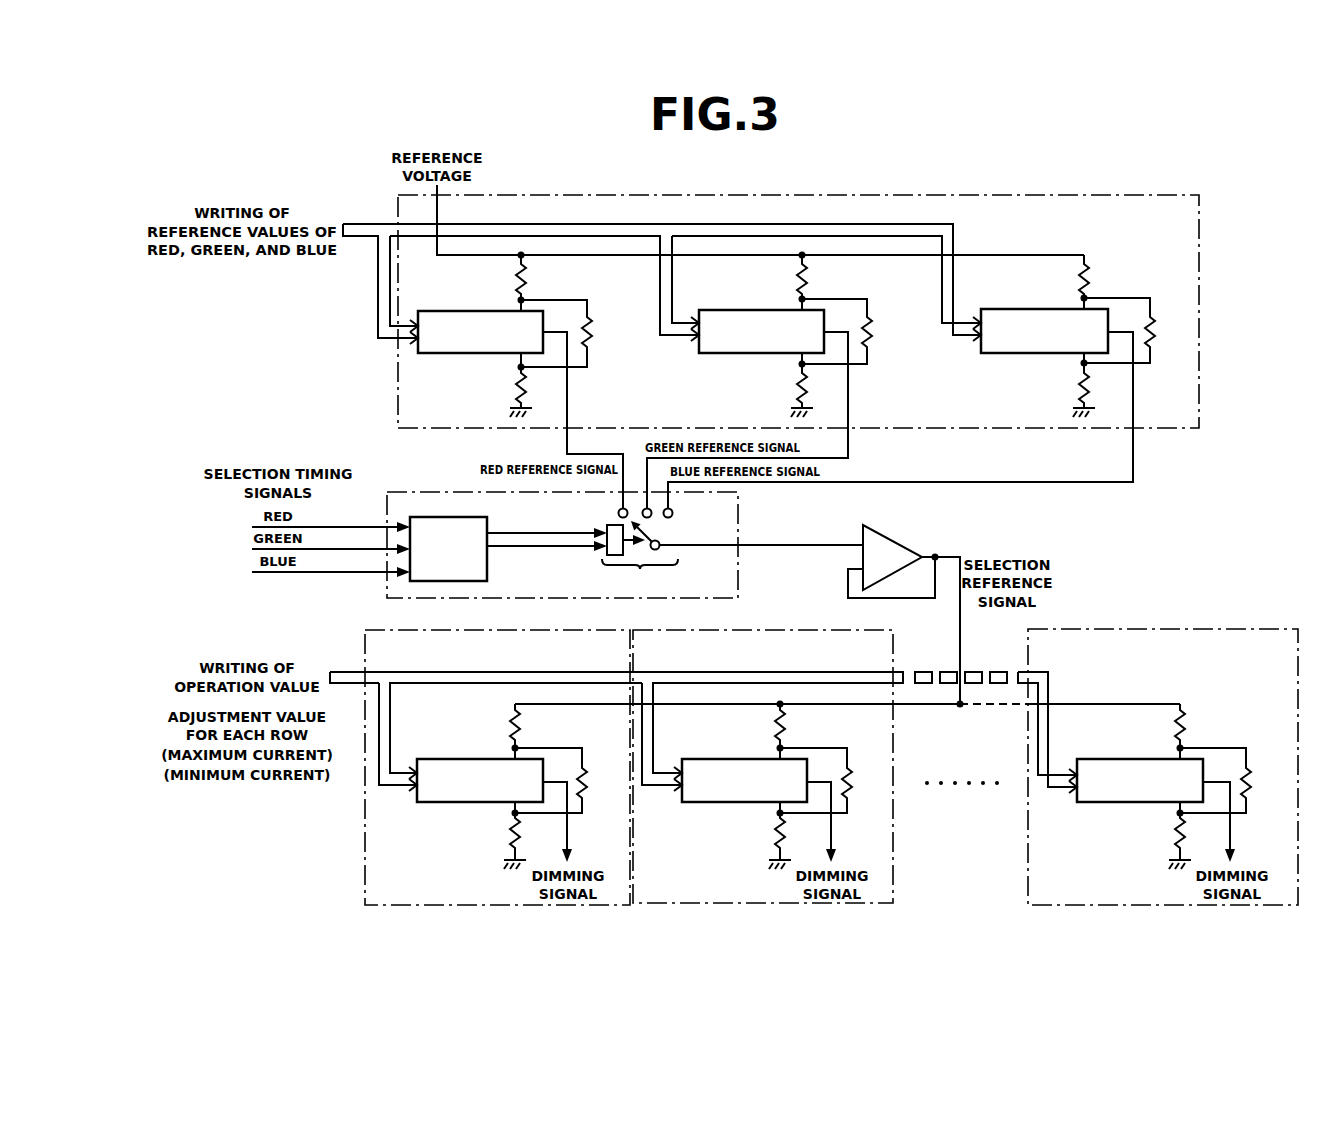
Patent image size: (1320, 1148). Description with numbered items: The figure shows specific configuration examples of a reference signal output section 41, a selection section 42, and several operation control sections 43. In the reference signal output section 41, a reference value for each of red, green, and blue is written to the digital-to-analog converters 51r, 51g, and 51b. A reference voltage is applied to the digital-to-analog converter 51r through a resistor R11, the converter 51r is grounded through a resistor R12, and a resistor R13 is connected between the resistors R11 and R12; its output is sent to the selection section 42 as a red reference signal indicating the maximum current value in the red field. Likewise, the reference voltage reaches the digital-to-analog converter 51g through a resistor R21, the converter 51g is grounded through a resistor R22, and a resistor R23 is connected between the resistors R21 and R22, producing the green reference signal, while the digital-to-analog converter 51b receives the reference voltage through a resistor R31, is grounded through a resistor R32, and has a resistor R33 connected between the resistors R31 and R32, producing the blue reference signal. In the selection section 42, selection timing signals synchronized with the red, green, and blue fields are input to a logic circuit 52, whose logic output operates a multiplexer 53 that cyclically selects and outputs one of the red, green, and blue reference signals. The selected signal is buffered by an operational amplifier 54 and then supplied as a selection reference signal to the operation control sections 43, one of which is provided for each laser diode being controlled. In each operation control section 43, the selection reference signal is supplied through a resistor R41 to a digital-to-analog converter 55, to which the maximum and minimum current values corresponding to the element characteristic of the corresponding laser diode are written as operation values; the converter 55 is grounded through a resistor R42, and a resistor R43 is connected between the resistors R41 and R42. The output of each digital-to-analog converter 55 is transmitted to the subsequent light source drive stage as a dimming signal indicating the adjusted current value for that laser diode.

The reference signal output section 41 is at (1100, 195).
The selection section 42 is at (445, 492).
The operation control section 43 is at (417, 630).
The digital-to-analog converter 51r is at (485, 310).
The digital-to-analog converter 51g is at (766, 310).
The digital-to-analog converter 51b is at (1048, 309).
The logic circuit 52 is at (487, 569).
The multiplexer 53 is at (649, 552).
The operational amplifier 54 is at (898, 543).
The digital-to-analog converter 55 is at (472, 758).
The resistor R11 is at (542, 283).
The resistor R12 is at (539, 385).
The resistor R13 is at (576, 335).
The resistor R21 is at (823, 282).
The resistor R22 is at (820, 385).
The resistor R23 is at (857, 333).
The resistor R31 is at (1105, 282).
The resistor R32 is at (1102, 385).
The resistor R33 is at (1139, 332).
The resistor R41 is at (869, 731).
The resistor R42 is at (866, 835).
The resistor R43 is at (903, 782).